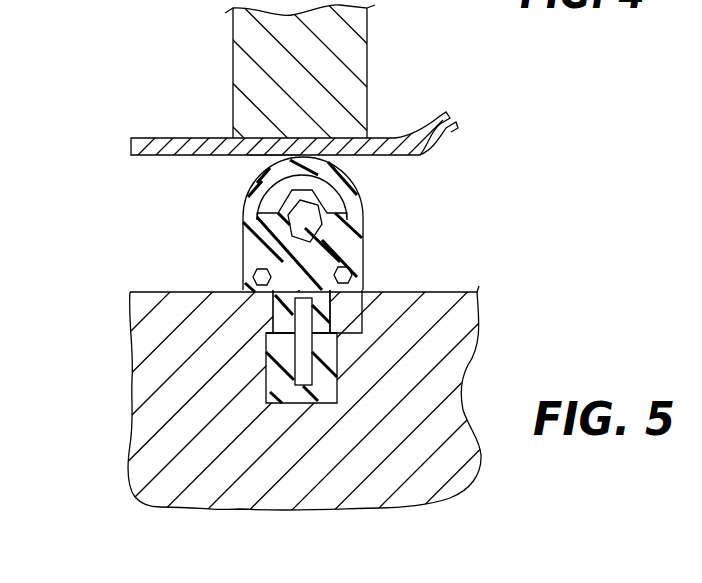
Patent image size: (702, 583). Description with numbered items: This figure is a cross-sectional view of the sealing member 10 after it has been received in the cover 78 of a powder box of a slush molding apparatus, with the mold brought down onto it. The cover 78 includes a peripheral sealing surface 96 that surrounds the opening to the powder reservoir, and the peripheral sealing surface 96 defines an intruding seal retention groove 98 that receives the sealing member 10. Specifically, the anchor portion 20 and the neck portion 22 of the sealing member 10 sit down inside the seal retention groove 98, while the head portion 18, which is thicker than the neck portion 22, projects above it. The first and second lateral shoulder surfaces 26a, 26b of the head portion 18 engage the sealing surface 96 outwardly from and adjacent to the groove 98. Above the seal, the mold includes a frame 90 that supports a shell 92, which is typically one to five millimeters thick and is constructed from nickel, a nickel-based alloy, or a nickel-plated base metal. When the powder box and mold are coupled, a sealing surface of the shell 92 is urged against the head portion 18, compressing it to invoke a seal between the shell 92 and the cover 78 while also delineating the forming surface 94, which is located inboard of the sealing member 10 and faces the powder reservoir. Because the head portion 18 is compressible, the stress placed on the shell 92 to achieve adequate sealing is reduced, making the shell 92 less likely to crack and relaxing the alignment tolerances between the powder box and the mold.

The sealing member 10 is at (369, 224).
The head portion 18 is at (364, 239).
The anchor portion 20 is at (328, 385).
The neck portion 22 is at (284, 320).
The first lateral shoulder surface 26a is at (262, 308).
The second lateral shoulder surface 26b is at (400, 298).
The cover 78 is at (155, 392).
The frame 90 is at (253, 72).
The shell 92 is at (208, 147).
The forming surface 94 is at (456, 133).
The peripheral sealing surface 96 is at (160, 291).
The seal retention groove 98 is at (247, 155).